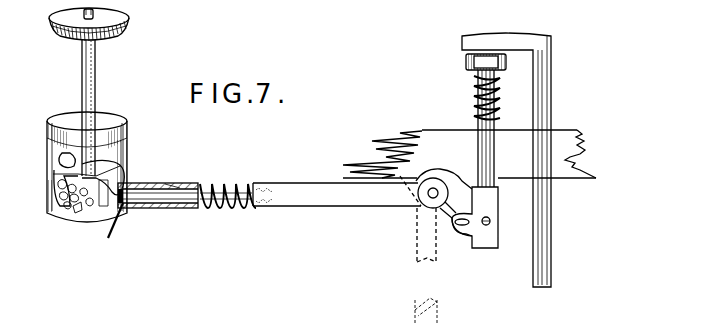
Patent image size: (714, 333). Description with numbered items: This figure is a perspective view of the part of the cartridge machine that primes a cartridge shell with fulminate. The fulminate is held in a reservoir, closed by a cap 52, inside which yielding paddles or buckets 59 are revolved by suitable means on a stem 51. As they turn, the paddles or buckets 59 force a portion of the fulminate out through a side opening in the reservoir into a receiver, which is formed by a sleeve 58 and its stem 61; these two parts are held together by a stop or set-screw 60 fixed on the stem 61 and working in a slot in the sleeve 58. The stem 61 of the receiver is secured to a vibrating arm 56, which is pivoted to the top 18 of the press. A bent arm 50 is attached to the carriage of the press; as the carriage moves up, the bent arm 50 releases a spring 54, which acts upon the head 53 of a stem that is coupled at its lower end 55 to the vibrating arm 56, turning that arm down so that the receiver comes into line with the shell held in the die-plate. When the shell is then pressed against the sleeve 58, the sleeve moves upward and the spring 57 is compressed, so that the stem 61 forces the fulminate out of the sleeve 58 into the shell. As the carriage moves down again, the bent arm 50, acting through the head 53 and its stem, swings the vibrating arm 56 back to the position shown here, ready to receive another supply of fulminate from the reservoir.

The top of the press 18 is at (469, 154).
The bent arm 50 is at (551, 86).
The stem 51 is at (95, 80).
The cap 52 is at (130, 30).
The head 53 is at (486, 62).
The spring 54 is at (495, 100).
The lower end of stem 55 is at (449, 247).
The vibrating arm 56 is at (337, 194).
The spring 57 is at (232, 208).
The sleeve 58 is at (168, 208).
The yielding paddles or buckets 59 is at (87, 175).
The stop or set-screw 60 is at (172, 186).
The stem of the receiver 61 is at (158, 196).